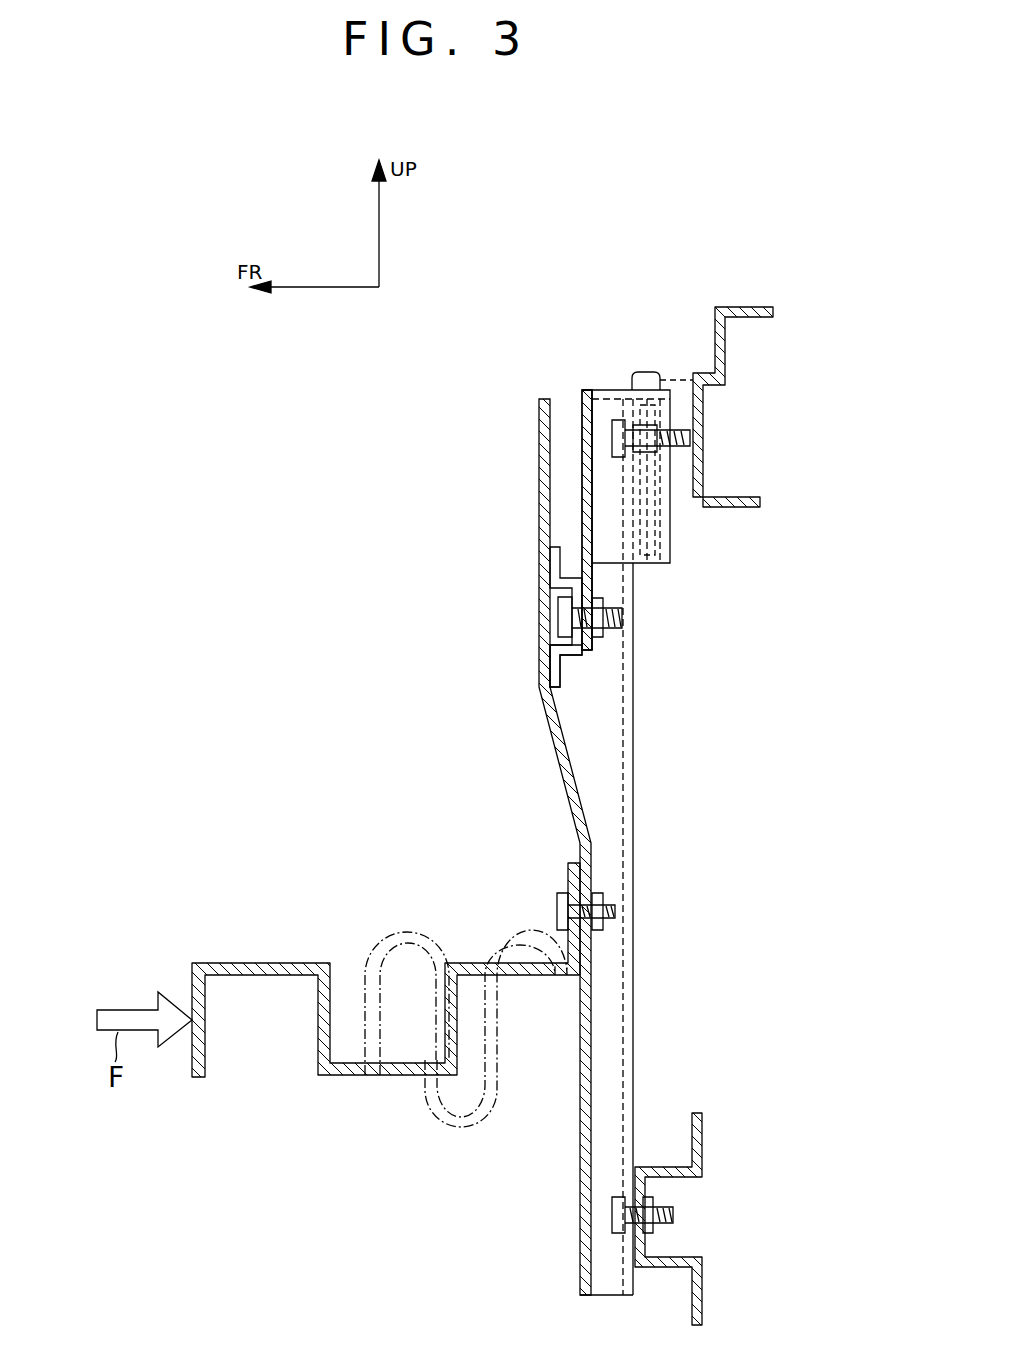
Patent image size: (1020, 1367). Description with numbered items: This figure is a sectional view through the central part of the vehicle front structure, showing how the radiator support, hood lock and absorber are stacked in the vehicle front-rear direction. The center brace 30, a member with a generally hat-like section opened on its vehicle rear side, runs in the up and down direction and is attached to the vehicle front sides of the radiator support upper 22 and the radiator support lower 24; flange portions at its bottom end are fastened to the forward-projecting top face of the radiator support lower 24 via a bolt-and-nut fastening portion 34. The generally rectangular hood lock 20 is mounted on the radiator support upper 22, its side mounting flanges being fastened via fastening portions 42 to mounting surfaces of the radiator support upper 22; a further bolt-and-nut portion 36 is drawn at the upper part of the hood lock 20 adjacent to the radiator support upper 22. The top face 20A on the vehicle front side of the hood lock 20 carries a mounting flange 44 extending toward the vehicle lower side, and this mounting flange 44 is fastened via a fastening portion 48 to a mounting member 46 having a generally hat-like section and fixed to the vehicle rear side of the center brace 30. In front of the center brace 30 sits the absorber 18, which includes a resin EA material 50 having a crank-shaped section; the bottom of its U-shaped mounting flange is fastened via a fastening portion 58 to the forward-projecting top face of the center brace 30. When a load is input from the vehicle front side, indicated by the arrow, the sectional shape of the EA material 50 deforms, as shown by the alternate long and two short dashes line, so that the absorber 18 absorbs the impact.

The absorber 18 is at (473, 1130).
The hood lock 20 is at (575, 805).
The top face 20A is at (582, 463).
The radiator support upper 22 is at (747, 307).
The radiator support lower 24 is at (703, 1140).
The center brace 30 is at (539, 526).
The fastening portion 34 is at (612, 1215).
The upper bolt 36 is at (612, 438).
The fastening portion 42 is at (636, 470).
The mounting flange 44 is at (560, 563).
The mounting member 46 is at (570, 657).
The fastening portion 48 is at (560, 618).
The EA material 50 is at (386, 1020).
The fastening portion 58 is at (557, 910).